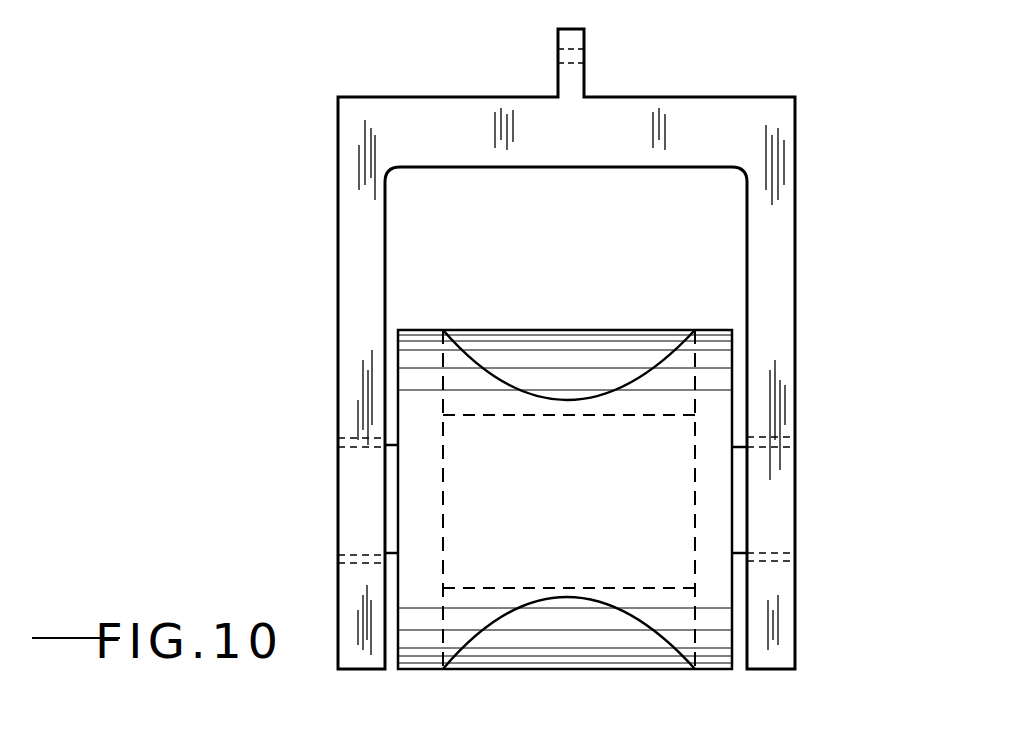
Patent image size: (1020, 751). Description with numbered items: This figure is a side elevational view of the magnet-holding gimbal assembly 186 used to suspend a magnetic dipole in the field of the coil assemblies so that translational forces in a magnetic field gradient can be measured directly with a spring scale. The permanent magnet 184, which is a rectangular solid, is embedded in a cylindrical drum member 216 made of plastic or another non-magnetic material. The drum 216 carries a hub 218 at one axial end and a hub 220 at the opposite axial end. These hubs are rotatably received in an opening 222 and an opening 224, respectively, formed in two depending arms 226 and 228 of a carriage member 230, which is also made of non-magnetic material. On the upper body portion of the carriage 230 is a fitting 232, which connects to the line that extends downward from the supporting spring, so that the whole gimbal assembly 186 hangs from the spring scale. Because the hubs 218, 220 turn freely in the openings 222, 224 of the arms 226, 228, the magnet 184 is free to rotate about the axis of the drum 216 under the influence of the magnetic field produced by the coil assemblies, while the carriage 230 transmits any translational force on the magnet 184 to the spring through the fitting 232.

The gimbal assembly 186 is at (822, 117).
The carriage member 230 is at (336, 112).
The fitting 232 is at (575, 80).
The depending arm 228 is at (775, 190).
The depending arm 226 is at (355, 262).
The cylindrical drum member 216 is at (722, 359).
The permanent magnet 184 is at (655, 413).
The hub 218 is at (348, 478).
The hub 220 is at (775, 478).
The opening 222 is at (350, 572).
The opening 224 is at (770, 560).